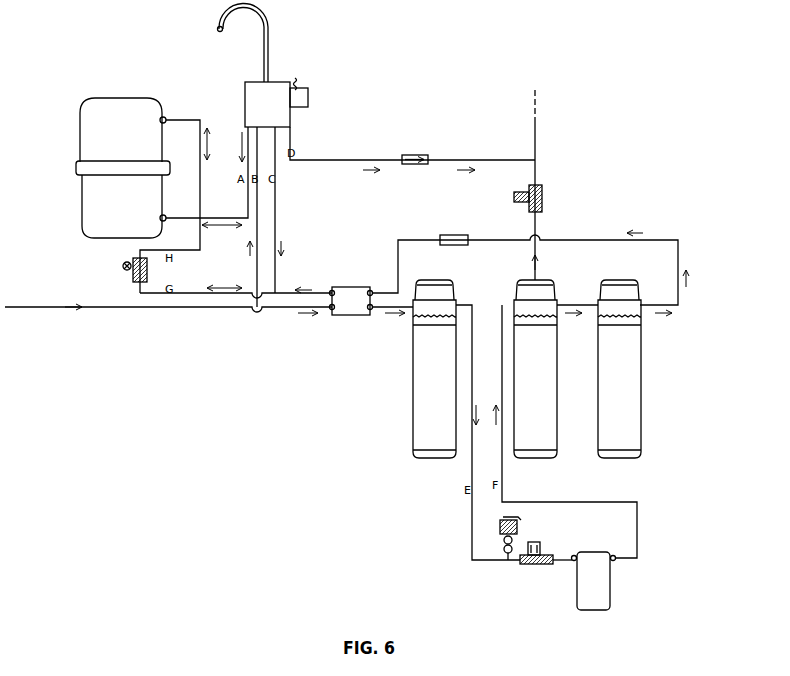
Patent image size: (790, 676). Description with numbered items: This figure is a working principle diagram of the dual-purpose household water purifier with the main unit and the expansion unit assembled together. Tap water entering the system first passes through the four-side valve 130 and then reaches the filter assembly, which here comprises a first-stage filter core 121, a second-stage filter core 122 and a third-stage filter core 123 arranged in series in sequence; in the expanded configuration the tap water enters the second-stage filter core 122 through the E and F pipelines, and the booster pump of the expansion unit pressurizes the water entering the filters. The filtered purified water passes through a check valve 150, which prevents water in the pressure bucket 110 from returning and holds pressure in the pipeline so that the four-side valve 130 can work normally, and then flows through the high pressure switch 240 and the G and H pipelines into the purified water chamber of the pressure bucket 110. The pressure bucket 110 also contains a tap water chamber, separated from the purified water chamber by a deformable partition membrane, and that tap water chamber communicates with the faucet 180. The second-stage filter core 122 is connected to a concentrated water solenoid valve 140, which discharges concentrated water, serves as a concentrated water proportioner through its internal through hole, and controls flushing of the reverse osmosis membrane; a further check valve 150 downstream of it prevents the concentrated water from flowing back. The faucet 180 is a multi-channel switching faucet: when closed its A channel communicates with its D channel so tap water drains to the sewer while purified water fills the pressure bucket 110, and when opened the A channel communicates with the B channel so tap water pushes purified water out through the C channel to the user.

The pressure bucket 110 is at (105, 215).
The first-stage filter core 121 is at (438, 430).
The second-stage filter core 122 is at (522, 430).
The third-stage filter core 123 is at (612, 433).
The four-side valve 130 is at (350, 302).
The concentrated water solenoid valve 140 is at (538, 188).
The check valve 150 is at (443, 236).
The faucet 180 is at (306, 90).
The high pressure switch 240 is at (131, 281).